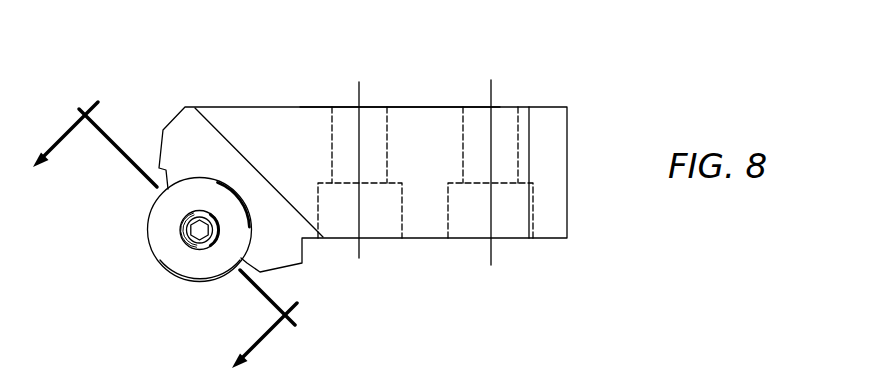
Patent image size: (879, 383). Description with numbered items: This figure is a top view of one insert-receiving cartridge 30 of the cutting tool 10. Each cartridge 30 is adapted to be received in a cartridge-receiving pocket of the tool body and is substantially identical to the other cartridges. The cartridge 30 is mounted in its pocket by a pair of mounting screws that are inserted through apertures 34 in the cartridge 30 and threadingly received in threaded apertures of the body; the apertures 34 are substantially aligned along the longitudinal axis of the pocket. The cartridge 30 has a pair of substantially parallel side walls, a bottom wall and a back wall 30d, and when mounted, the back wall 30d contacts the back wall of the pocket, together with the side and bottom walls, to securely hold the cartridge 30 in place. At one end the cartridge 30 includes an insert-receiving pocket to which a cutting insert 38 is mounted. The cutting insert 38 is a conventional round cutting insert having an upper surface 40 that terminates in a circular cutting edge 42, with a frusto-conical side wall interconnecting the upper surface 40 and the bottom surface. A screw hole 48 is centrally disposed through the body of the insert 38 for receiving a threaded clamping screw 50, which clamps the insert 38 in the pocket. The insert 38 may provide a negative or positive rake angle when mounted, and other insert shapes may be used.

The cutting tool 10 is at (182, 222).
The insert-receiving cartridge 30 is at (440, 38).
The back wall 30d is at (420, 107).
The apertures 34 is at (333, 157).
The cutting insert 38 is at (180, 303).
The upper surface 40 is at (155, 217).
The circular cutting edge 42 is at (200, 282).
The screw hole 48 is at (200, 212).
The threaded clamping screw 50 is at (195, 240).